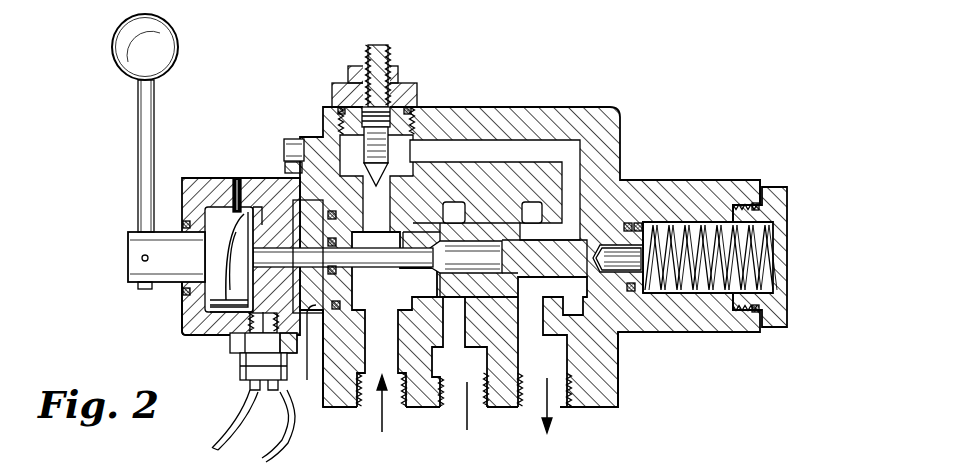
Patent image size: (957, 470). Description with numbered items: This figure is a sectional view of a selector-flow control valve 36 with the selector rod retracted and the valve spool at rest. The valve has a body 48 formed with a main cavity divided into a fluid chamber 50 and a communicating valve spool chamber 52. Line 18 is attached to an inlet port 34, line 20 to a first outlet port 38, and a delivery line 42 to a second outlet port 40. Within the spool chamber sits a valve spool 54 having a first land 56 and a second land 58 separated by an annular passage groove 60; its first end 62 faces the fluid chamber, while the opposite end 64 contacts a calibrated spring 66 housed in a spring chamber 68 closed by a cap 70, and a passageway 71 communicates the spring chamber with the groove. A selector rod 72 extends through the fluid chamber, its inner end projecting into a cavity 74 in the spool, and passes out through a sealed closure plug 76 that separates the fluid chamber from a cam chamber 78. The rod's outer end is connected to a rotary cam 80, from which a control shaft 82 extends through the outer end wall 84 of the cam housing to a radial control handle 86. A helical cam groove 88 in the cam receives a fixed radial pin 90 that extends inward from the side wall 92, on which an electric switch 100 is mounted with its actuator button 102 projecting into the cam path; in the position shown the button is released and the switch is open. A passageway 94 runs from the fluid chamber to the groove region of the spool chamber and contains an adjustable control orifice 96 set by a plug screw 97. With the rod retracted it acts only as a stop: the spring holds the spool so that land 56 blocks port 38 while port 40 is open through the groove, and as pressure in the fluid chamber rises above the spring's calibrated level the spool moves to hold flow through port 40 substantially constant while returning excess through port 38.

The line 18 is at (382, 427).
The line 20 is at (467, 417).
The inlet port 34 is at (377, 357).
The selector-flow control valve 36 is at (560, 104).
The first outlet port 38 is at (443, 345).
The second outlet port 40 is at (534, 336).
The delivery line 42 is at (553, 412).
The body 48 is at (620, 393).
The fluid chamber 50 is at (393, 293).
The valve spool chamber 52 is at (487, 225).
The valve spool 54 is at (562, 271).
The first land 56 is at (485, 298).
The second land 58 is at (640, 212).
The annular passage groove 60 is at (573, 227).
The first end 62 is at (437, 244).
The opposite end 64 is at (633, 292).
The calibrated spring 66 is at (732, 300).
The spring chamber 68 is at (690, 297).
The cap 70 is at (787, 309).
The passageway 71 is at (594, 256).
The selector rod 72 is at (303, 257).
The cavity 74 is at (440, 273).
The closure plug 76 is at (312, 355).
The cam chamber 78 is at (265, 208).
The rotary cam 80 is at (188, 309).
The control shaft 82 is at (128, 258).
The outer end wall 84 is at (182, 197).
The radial control handle 86 is at (150, 104).
The helical cam groove 88 is at (218, 240).
The fixed radial pin 90 is at (232, 190).
The side wall 92 is at (277, 177).
The passageway 94 is at (484, 148).
The control orifice 96 is at (393, 167).
The plug screw 97 is at (400, 137).
The electric switch 100 is at (238, 360).
The actuator button 102 is at (267, 313).